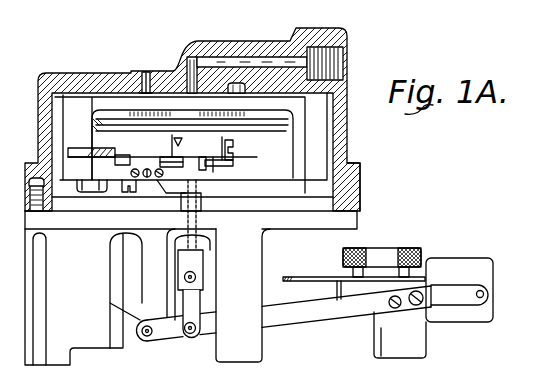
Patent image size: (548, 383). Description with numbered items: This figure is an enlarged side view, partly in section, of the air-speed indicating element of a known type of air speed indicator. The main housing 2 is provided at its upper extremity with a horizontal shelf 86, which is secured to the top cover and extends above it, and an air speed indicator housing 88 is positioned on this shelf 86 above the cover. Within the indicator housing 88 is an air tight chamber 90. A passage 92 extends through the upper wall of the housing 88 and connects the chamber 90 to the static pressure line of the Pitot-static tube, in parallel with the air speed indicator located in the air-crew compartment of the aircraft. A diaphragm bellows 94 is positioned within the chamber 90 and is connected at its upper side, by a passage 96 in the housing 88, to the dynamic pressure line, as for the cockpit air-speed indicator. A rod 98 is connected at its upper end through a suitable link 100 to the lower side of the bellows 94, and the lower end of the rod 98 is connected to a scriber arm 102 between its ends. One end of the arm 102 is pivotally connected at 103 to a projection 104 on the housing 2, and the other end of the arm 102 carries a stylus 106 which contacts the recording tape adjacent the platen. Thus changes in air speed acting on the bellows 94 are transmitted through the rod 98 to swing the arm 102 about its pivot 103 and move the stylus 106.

The housing 2 is at (352, 158).
The horizontal shelf 86 is at (355, 222).
The air speed indicator housing 88 is at (358, 173).
The air tight chamber 90 is at (85, 93).
The passage 92 is at (146, 72).
The diaphragm bellows 94 is at (283, 127).
The passage 96 is at (179, 58).
The rod 98 is at (197, 192).
The link 100 is at (217, 163).
The scriber arm 102 is at (321, 326).
The pivotal connection 103 is at (148, 340).
The projection 104 is at (124, 338).
The stylus 106 is at (486, 289).